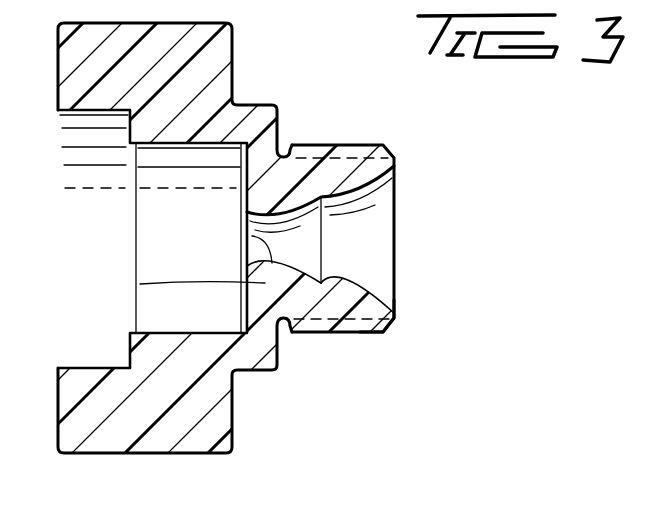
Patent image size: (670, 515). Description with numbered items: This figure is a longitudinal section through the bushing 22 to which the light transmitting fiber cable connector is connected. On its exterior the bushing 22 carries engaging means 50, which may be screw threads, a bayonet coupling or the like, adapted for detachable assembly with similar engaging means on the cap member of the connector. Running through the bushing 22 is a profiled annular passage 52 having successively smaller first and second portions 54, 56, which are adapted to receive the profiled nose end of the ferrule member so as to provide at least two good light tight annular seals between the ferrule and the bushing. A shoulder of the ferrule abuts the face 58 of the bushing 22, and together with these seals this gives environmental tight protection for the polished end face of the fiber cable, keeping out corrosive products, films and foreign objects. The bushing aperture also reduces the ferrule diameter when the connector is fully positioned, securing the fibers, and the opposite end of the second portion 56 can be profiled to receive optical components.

The bushing 22 is at (230, 452).
The engaging means 50 is at (337, 334).
The profiled annular passage 52 is at (374, 232).
The first portion 54 is at (367, 290).
The second portion 56 is at (252, 236).
The face 58 is at (397, 320).